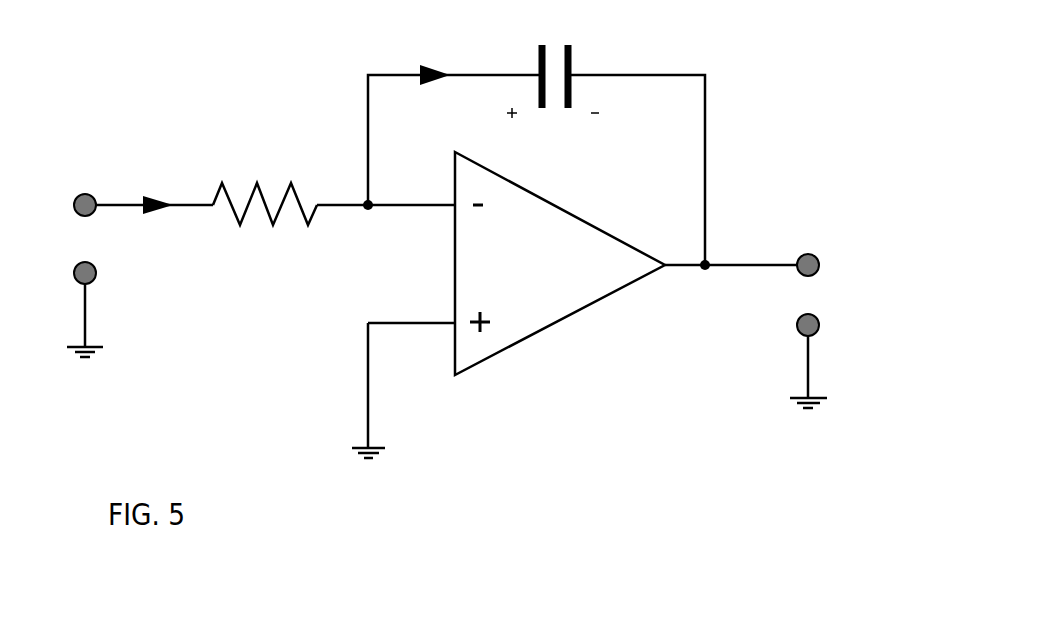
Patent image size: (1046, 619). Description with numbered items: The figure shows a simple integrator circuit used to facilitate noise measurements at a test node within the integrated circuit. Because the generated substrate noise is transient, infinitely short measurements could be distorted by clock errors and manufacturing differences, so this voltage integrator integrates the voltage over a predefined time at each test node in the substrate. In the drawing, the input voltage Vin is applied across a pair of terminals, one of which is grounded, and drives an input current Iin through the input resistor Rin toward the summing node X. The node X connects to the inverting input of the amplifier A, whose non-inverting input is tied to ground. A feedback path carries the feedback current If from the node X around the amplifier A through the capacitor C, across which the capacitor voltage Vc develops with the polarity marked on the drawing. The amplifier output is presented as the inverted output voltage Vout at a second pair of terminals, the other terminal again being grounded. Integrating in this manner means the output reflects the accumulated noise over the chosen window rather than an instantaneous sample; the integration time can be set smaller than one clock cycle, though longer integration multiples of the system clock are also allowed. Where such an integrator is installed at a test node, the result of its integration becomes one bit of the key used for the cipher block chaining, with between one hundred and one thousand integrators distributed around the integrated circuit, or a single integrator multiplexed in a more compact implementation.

The input voltage terminals Vin is at (58, 275).
The input current Iin is at (154, 178).
The input resistor Rin is at (265, 177).
The summing node X is at (386, 186).
The feedback current If is at (536, 138).
The feedback capacitor C is at (571, 55).
The capacitor voltage Vc is at (553, 131).
The operational amplifier A is at (574, 305).
The output voltage terminals Vout is at (856, 331).